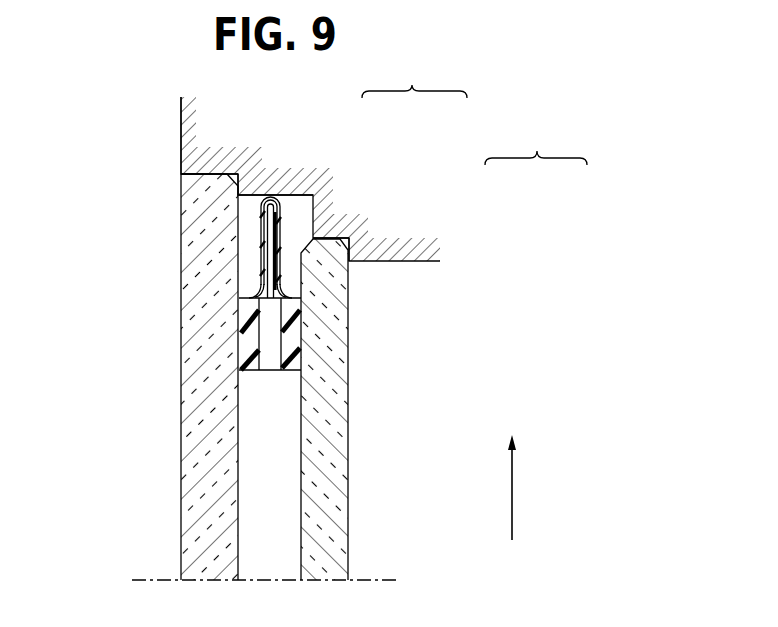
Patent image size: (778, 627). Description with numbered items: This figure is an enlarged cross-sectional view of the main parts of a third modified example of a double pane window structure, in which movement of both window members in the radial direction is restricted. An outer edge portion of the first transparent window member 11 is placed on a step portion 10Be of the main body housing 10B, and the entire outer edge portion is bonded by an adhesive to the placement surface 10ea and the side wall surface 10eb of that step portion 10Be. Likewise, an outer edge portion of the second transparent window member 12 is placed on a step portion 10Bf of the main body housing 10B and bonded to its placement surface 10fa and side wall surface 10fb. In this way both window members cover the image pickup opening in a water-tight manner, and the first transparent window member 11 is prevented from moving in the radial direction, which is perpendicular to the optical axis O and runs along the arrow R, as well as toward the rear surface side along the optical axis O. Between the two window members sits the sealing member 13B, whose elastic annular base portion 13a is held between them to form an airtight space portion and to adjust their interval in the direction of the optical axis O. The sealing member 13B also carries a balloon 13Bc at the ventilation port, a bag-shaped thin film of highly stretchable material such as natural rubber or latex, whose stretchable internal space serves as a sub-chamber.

The main body housing 10B is at (188, 146).
The step portion 10Be is at (414, 76).
The side wall surface 10eb is at (211, 164).
The placement surface 10ea is at (246, 184).
The step portion 10Bf is at (536, 142).
The side wall surface 10fb is at (338, 229).
The placement surface 10fa is at (360, 252).
The first transparent window member 11 is at (197, 300).
The second transparent window member 12 is at (335, 388).
The sealing member 13B is at (362, 283).
The balloon 13Bc is at (280, 265).
The annular base portion 13a is at (262, 355).
The optical axis O is at (146, 580).
The arrow R is at (512, 503).